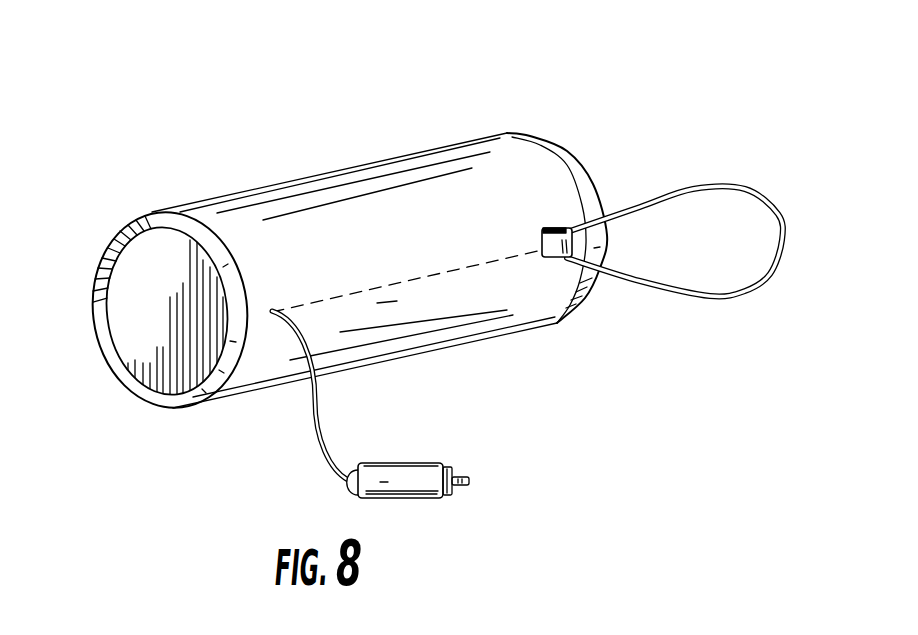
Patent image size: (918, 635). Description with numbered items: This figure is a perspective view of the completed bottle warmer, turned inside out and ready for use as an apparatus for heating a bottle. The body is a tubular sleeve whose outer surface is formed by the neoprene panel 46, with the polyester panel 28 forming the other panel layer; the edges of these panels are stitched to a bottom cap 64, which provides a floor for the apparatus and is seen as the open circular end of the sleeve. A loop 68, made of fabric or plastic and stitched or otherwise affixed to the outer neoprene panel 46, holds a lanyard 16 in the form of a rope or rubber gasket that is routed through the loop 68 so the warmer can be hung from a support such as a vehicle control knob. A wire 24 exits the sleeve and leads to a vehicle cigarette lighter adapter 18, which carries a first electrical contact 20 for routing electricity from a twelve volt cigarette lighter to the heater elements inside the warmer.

The lanyard 16 is at (781, 219).
The vehicle cigarette lighter adapter 18 is at (403, 498).
The first electrical contact 20 is at (473, 482).
The wire 24 is at (320, 418).
The polyester panel 28 is at (565, 147).
The neoprene panel 46 is at (414, 175).
The bottom cap 64 is at (147, 322).
The loop 68 is at (547, 222).